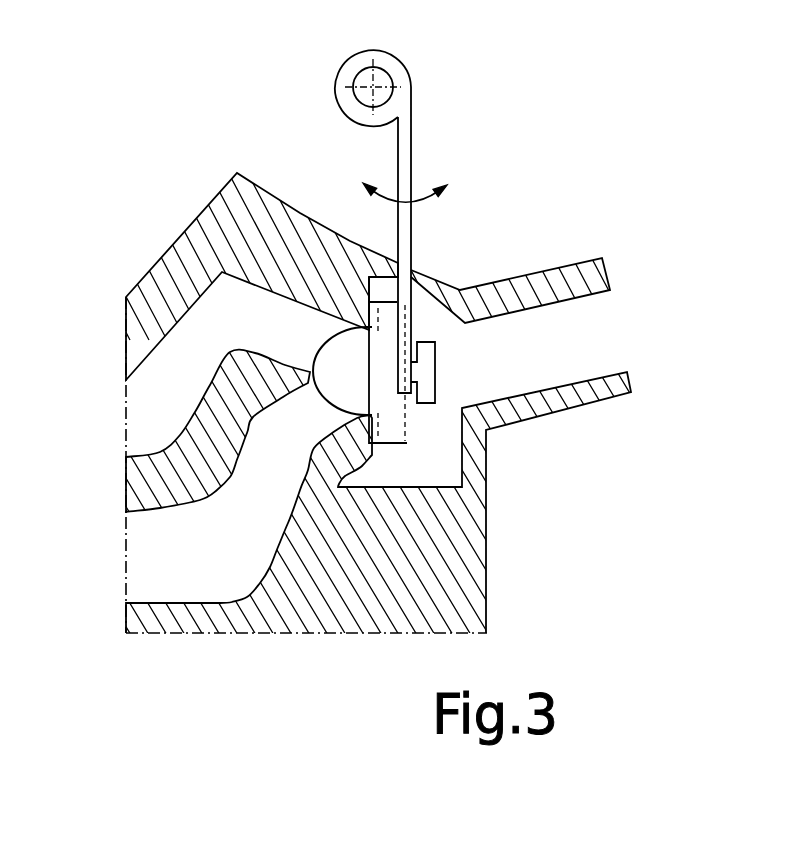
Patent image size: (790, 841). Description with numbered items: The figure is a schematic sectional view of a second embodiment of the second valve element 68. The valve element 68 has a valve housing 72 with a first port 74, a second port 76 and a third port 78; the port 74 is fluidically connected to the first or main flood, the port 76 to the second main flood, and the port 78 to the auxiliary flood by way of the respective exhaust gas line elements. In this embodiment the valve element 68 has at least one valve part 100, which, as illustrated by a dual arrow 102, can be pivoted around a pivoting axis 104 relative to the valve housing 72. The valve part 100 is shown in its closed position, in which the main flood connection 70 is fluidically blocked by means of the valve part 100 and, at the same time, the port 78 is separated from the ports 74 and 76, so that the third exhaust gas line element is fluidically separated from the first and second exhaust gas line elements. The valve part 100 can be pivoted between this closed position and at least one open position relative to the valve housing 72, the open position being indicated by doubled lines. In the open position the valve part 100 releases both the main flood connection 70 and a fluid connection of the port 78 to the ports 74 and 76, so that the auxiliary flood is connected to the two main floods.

The second valve element 68 is at (423, 67).
The main flood connection 70 is at (313, 412).
The valve housing 72 is at (325, 620).
The first port 74 is at (120, 553).
The second port 76 is at (120, 418).
The third port 78 is at (618, 327).
The valve part 100 is at (402, 295).
The dual arrow 102 is at (420, 203).
The pivoting axis 104 is at (372, 83).